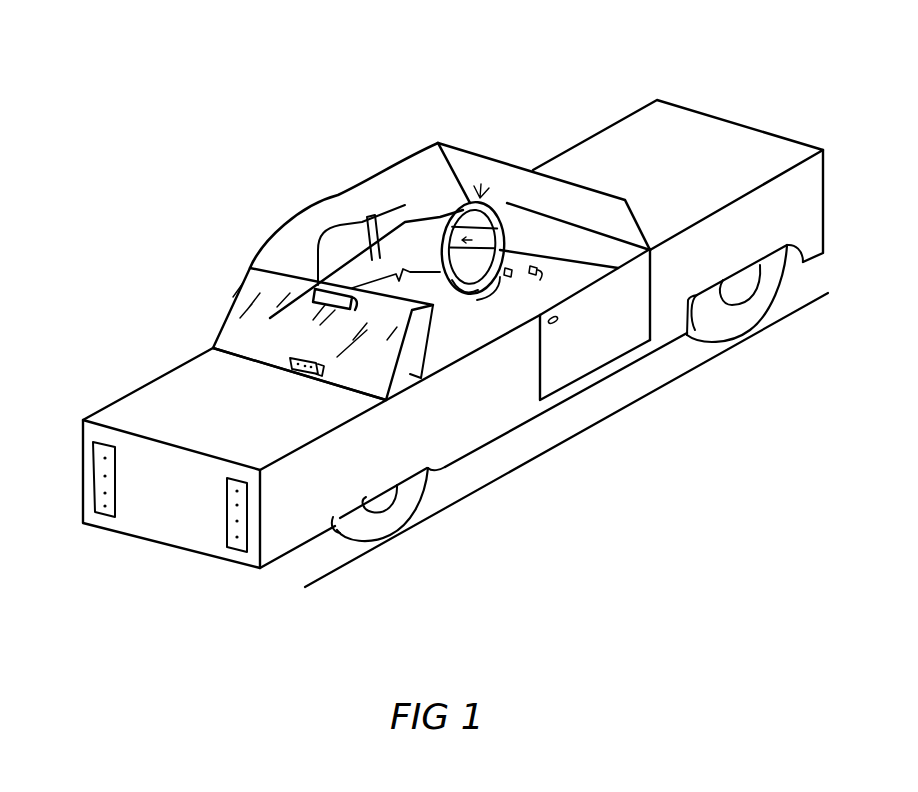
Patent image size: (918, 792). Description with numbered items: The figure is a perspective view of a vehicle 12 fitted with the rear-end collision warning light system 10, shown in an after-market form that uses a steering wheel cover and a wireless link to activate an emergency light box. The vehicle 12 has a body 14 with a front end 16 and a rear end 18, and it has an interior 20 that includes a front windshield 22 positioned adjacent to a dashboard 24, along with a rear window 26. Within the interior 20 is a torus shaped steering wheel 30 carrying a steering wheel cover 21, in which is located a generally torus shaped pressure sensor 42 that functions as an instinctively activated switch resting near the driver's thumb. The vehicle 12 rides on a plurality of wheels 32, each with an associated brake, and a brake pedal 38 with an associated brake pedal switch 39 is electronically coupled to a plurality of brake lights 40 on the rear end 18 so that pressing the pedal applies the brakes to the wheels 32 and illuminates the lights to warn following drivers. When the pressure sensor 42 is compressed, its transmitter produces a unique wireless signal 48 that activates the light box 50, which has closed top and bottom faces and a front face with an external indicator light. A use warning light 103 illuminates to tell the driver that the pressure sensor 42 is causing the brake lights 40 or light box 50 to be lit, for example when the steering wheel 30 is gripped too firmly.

The rear-end collision warning light system 10 is at (265, 152).
The vehicle 12 is at (607, 122).
The body 14 is at (749, 236).
The front end 16 is at (737, 120).
The rear end 18 is at (190, 522).
The interior 20 is at (488, 318).
The steering wheel cover 21 is at (418, 232).
The front windshield 22 is at (458, 168).
The dashboard 24 is at (548, 257).
The rear window 26 is at (247, 280).
The steering wheel 30 is at (510, 204).
The wheels 32 is at (740, 327).
The brake pedal 38 is at (441, 332).
The brake pedal switch 39 is at (510, 312).
The brake lights 40 is at (102, 483).
The pressure sensor 42 is at (378, 177).
The unique wireless signal 48 is at (337, 220).
The light box 50 is at (280, 273).
The use warning light 103 is at (503, 203).